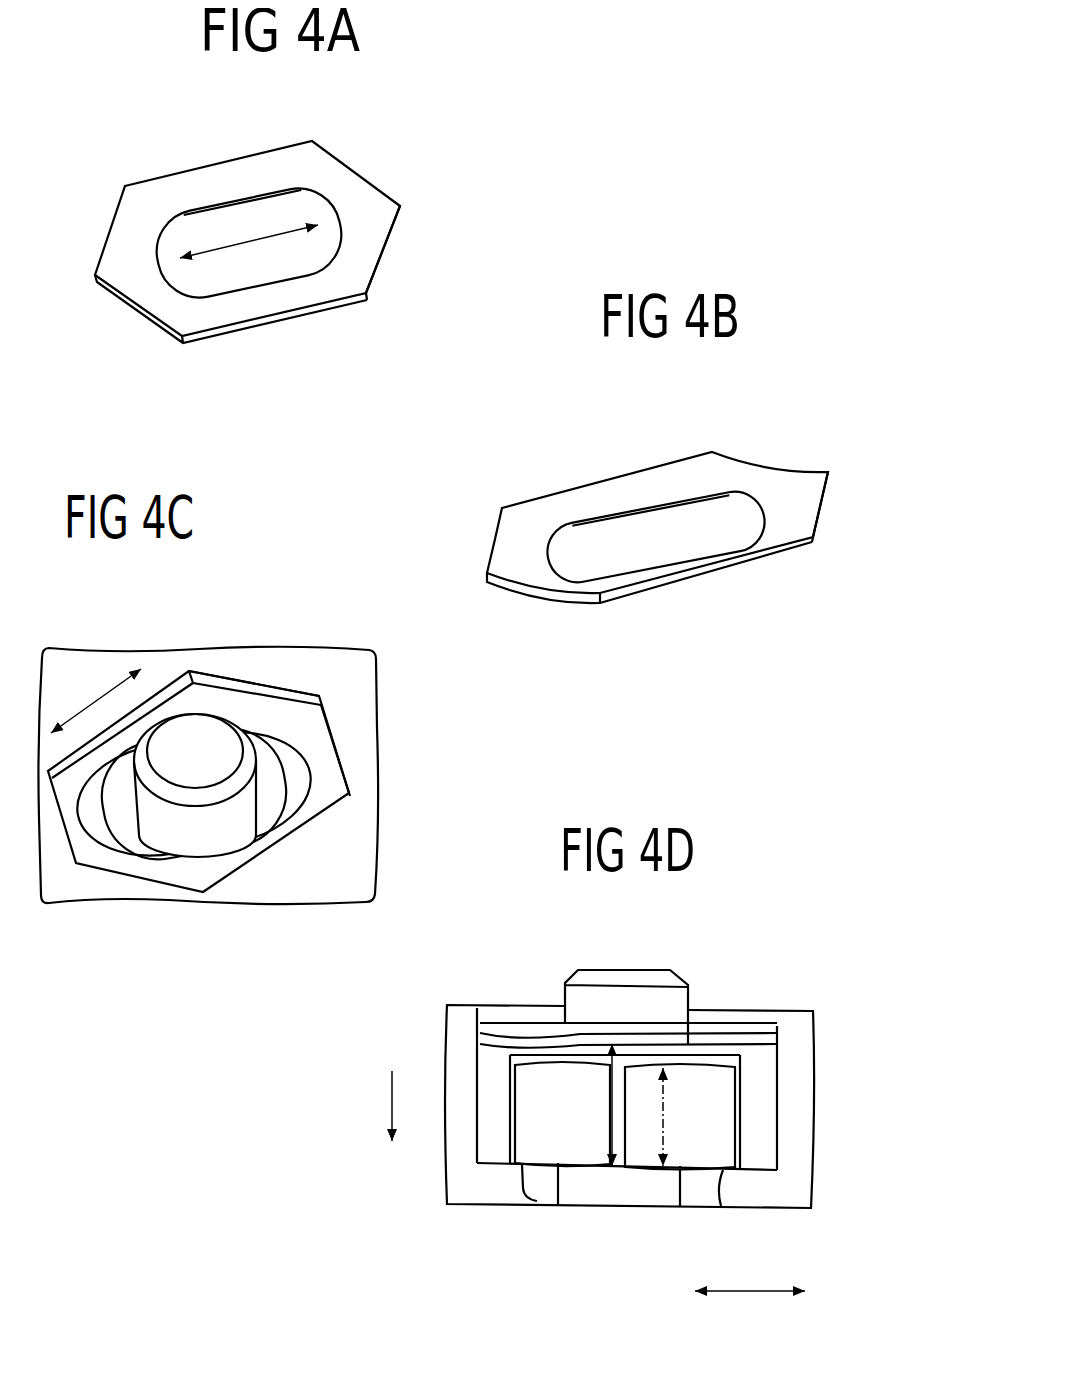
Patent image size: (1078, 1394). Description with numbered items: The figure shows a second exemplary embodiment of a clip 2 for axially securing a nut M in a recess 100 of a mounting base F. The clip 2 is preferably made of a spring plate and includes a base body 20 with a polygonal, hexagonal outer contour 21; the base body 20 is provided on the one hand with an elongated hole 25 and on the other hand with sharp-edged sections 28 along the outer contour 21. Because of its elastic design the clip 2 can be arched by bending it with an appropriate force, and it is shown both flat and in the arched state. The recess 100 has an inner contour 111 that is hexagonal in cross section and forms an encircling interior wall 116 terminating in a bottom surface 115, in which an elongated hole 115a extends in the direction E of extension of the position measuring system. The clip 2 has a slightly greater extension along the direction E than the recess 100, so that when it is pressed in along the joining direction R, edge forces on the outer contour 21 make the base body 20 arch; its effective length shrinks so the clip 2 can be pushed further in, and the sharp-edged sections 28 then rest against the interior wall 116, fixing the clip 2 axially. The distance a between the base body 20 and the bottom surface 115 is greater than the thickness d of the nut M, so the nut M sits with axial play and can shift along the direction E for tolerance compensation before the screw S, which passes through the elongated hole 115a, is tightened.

In FIG. 4A, the clip 2 is at (159, 115).
In FIG. 4B, the clip 2 is at (547, 448).
In FIG. 4C, the clip 2 is at (311, 765).
In FIG. 4D, the clip 2 is at (526, 1023).
In FIG. 4A, the base body 20 is at (123, 255).
In FIG. 4B, the base body 20 is at (507, 540).
In FIG. 4C, the base body 20 is at (328, 793).
In FIG. 4A, the outer contour 21 is at (330, 300).
In FIG. 4B, the outer contour 21 is at (780, 552).
In FIG. 4A, the elongated hole 25 is at (310, 196).
In FIG. 4B, the elongated hole 25 is at (722, 504).
In FIG. 4C, the elongated hole 25 is at (118, 841).
In FIG. 4A, the sharp-edged sections 28 is at (383, 258).
In FIG. 4B, the sharp-edged sections 28 is at (828, 498).
In FIG. 4C, the sharp-edged sections 28 is at (222, 687).
In FIG. 4C, the recess 100 is at (300, 686).
In FIG. 4C, the inner contour 111 is at (263, 692).
In FIG. 4D, the bottom surface 115 is at (488, 1160).
In FIG. 4D, the elongated hole 115a is at (538, 1203).
In FIG. 4C, the interior wall 116 is at (210, 680).
In FIG. 4D, the interior wall 116 is at (482, 1064).
In FIG. 4A, the direction of extension E is at (249, 231).
In FIG. 4C, the direction of extension E is at (96, 698).
In FIG. 4D, the direction of extension E is at (750, 1270).
In FIG. 4C, the mounting base F is at (356, 862).
In FIG. 4C, the nut M is at (272, 792).
In FIG. 4D, the nut M is at (642, 1162).
In FIG. 4D, the joining direction R is at (380, 1106).
In FIG. 4C, the screw S is at (195, 839).
In FIG. 4D, the screw S is at (662, 1003).
In FIG. 4D, the distance a is at (601, 1105).
In FIG. 4D, the thickness d is at (653, 1117).